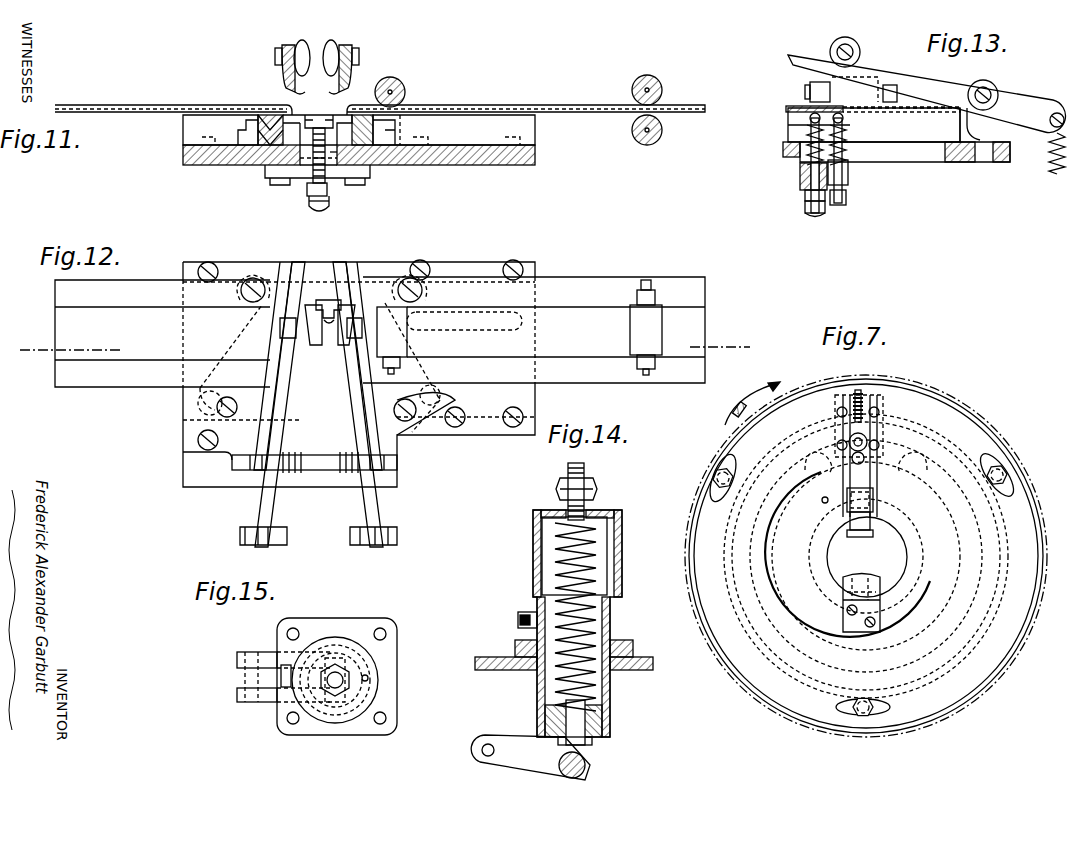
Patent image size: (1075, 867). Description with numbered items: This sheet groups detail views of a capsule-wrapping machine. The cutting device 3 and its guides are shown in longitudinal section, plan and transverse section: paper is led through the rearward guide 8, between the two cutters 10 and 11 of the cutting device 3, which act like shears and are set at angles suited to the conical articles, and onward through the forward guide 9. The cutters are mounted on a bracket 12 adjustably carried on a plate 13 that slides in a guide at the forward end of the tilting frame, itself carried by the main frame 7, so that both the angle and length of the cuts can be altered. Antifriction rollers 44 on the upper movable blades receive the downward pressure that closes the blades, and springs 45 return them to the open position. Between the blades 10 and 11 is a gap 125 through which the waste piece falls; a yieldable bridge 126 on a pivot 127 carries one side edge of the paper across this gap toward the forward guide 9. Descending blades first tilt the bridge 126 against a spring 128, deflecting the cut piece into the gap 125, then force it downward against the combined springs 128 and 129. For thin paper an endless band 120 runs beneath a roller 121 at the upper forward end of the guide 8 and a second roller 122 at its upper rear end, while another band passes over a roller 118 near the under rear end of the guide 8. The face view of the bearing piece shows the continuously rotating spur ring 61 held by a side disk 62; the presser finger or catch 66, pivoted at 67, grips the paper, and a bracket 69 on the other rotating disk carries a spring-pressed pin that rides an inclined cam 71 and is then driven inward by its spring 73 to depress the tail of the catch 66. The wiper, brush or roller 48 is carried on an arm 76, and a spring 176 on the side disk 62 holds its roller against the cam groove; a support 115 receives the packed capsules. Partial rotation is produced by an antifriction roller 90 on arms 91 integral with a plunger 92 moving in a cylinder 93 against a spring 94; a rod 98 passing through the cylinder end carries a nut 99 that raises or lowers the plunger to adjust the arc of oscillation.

In FIG. 11, the cutting device 3 is at (317, 80).
In FIG. 14, the main frame 7 is at (520, 668).
In FIG. 11, the rearward guide 8 is at (584, 108).
In FIG. 13, the rearward guide 8 is at (805, 104).
In FIG. 12, the rearward guide 8 is at (534, 330).
In FIG. 11, the forward guide 9 is at (128, 107).
In FIG. 12, the forward guide 9 is at (162, 333).
In FIG. 11, the cutter 10 is at (282, 114).
In FIG. 12, the cutter 10 is at (272, 389).
In FIG. 11, the cutter 11 is at (360, 114).
In FIG. 13, the cutter 11 is at (897, 104).
In FIG. 12, the cutter 11 is at (358, 414).
In FIG. 11, the bracket 12 is at (260, 140).
In FIG. 12, the bracket 12 is at (244, 470).
In FIG. 11, the plate 13 is at (190, 166).
In FIG. 13, the plate 13 is at (952, 150).
In FIG. 12, the plate 13 is at (195, 468).
In FIG. 11, the antifriction rollers 44 is at (300, 40).
In FIG. 13, the antifriction rollers 44 is at (838, 42).
In FIG. 12, the antifriction rollers 44 is at (341, 340).
In FIG. 13, the springs 45 is at (1050, 150).
In FIG. 7, the wiper, brush, or roller 48 is at (874, 503).
In FIG. 7, the spur ring 61 is at (698, 625).
In FIG. 7, the side disk 62 is at (965, 432).
In FIG. 7, the presser finger, or catch 66 is at (858, 533).
In FIG. 7, the pivot 67 is at (920, 470).
In FIG. 7, the bracket 69 is at (838, 398).
In FIG. 7, the inclined surface, or cam 71 is at (805, 530).
In FIG. 7, the spring 73 is at (1043, 594).
In FIG. 7, the arm 76 is at (880, 456).
In FIG. 14, the antifriction roller 90 is at (576, 776).
In FIG. 14, the arms 91 is at (487, 757).
In FIG. 15, the arms 91 is at (240, 670).
In FIG. 14, the plunger 92 is at (612, 715).
In FIG. 14, the cylinder 93 is at (622, 538).
In FIG. 15, the cylinder 93 is at (372, 680).
In FIG. 14, the spring 94 is at (600, 580).
In FIG. 14, the rod 98 is at (562, 565).
In FIG. 14, the nut 99 is at (594, 495).
In FIG. 7, the support 115 is at (858, 578).
In FIG. 11, the roller 118 is at (647, 145).
In FIG. 12, the endless band 120 is at (395, 335).
In FIG. 11, the roller 121 is at (402, 87).
In FIG. 13, the roller 121 is at (851, 91).
In FIG. 12, the roller 121 is at (648, 325).
In FIG. 11, the second roller 122 is at (660, 85).
In FIG. 11, the gap 125 is at (335, 160).
In FIG. 13, the gap 125 is at (867, 137).
In FIG. 12, the gap 125 is at (314, 450).
In FIG. 11, the yieldable bridge 126 is at (312, 118).
In FIG. 13, the yieldable bridge 126 is at (805, 120).
In FIG. 12, the yieldable bridge 126 is at (323, 303).
In FIG. 13, the pivot 127 is at (808, 128).
In FIG. 11, the spring 128 is at (310, 188).
In FIG. 13, the spring 128 is at (840, 142).
In FIG. 13, the spring 129 is at (802, 168).
In FIG. 7, the spring 176 is at (863, 415).